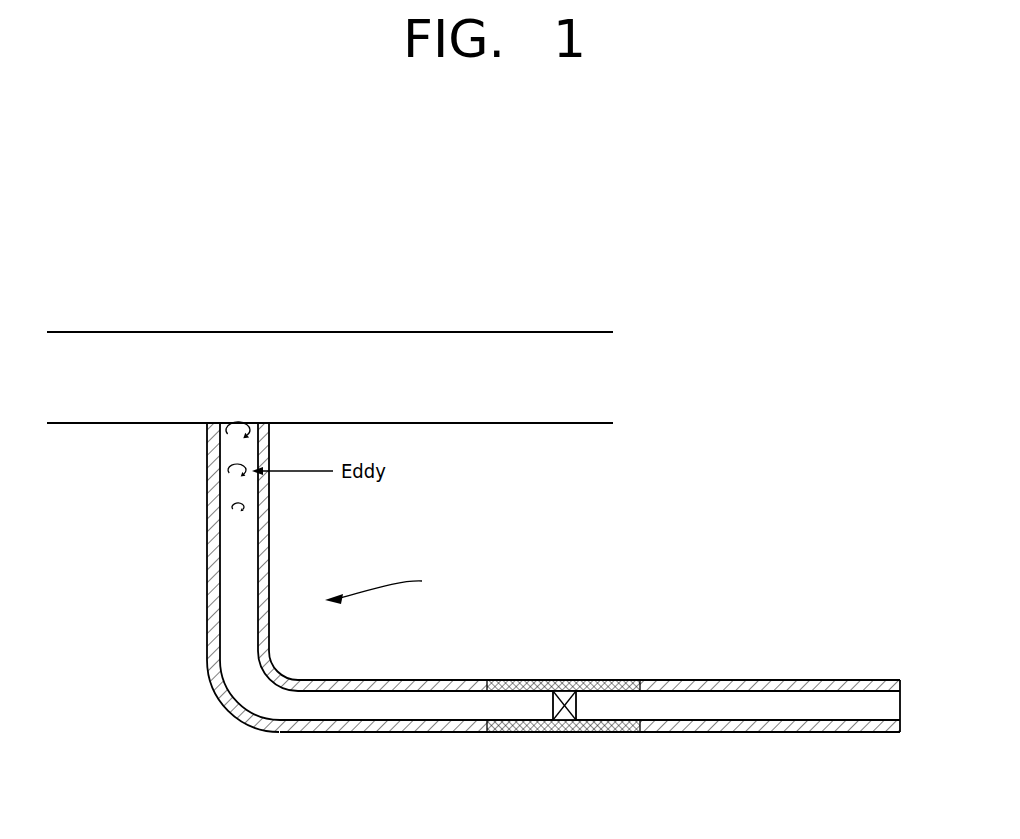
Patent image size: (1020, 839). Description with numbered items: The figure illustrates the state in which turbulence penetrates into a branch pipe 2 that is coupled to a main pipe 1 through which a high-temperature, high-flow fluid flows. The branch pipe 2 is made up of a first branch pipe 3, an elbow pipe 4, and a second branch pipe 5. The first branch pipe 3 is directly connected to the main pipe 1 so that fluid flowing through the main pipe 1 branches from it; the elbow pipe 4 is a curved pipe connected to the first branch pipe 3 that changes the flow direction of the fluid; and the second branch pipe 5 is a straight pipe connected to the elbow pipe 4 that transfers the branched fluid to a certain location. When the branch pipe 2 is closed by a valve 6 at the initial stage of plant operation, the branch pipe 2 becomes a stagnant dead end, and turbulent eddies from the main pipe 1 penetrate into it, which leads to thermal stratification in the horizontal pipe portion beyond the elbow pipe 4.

The main pipe 1 is at (386, 332).
The branch pipe 2 is at (384, 586).
The first branch pipe 3 is at (207, 568).
The elbow pipe 4 is at (231, 703).
The second branch pipe 5 is at (458, 732).
The valve 6 is at (575, 707).